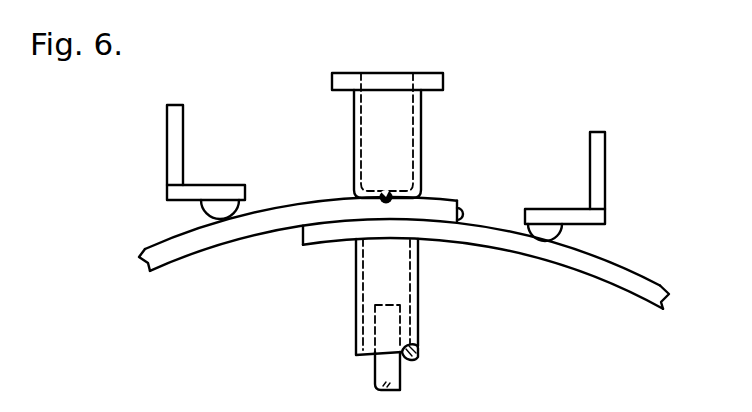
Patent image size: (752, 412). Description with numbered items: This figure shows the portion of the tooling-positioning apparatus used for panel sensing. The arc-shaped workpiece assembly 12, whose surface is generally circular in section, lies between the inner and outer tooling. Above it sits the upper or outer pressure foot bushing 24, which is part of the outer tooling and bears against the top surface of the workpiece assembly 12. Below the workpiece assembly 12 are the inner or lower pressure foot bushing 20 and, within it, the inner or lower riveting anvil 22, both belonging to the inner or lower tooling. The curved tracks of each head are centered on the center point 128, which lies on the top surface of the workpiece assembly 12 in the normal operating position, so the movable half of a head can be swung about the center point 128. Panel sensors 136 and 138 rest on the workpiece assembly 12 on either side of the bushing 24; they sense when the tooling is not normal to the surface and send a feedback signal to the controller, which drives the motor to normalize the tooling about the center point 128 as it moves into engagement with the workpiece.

The arc-shaped workpiece assembly 12 is at (280, 204).
The inner or lower pressure foot bushing 20 is at (420, 300).
The inner or lower riveting anvil 22 is at (401, 379).
The upper or outer pressure foot bushing 24 is at (422, 126).
The center point 128 is at (384, 201).
The panel sensor 136 is at (207, 206).
The panel sensor 138 is at (565, 237).